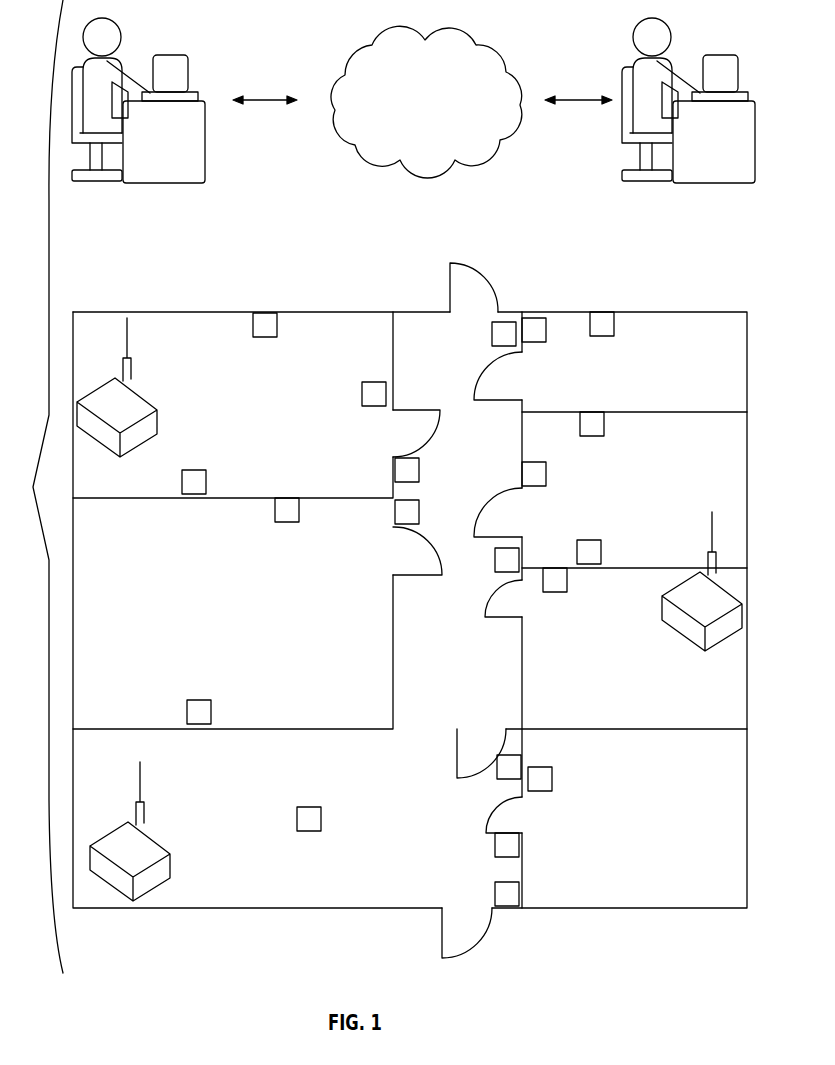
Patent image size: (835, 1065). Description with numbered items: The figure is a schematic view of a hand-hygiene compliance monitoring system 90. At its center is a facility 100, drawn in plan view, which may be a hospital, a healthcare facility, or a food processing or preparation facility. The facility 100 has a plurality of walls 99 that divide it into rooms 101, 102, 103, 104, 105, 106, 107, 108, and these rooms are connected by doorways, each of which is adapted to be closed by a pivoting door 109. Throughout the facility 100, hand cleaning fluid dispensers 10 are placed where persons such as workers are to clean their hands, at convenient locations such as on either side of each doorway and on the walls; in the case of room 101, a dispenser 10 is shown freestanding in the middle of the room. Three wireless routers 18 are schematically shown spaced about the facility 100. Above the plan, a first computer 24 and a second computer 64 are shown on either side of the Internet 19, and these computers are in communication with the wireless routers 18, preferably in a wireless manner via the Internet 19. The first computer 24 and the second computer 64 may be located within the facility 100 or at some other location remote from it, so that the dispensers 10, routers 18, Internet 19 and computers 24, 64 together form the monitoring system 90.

The hand cleaning fluid dispenser 10 is at (262, 324).
The wireless router 18 is at (109, 419).
The Internet 19 is at (472, 42).
The first computer 24 is at (150, 153).
The second computer 64 is at (700, 153).
The hand-hygiene compliance monitoring system 90 is at (34, 486).
The wall 99 is at (174, 912).
The facility 100 is at (156, 266).
The room 101 is at (289, 882).
The room 102 is at (642, 834).
The room 103 is at (601, 675).
The room 104 is at (472, 674).
The room 105 is at (217, 624).
The room 106 is at (654, 495).
The room 107 is at (654, 392).
The room 108 is at (226, 412).
The pivoting door 109 is at (450, 291).